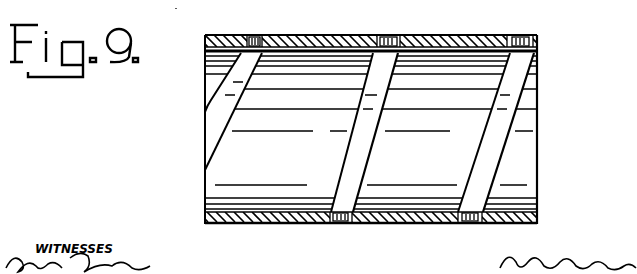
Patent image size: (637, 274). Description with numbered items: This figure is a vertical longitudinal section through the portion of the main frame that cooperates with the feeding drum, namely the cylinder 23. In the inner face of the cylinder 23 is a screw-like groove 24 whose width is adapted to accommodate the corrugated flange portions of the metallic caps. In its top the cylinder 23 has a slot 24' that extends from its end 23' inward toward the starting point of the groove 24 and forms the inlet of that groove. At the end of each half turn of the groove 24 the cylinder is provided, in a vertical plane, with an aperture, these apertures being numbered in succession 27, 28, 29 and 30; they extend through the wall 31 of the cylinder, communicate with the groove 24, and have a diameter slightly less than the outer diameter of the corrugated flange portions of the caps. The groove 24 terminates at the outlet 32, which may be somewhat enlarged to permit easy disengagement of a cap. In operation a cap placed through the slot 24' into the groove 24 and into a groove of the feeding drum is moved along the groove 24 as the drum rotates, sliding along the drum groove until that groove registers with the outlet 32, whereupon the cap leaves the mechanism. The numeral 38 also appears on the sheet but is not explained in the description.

The cylinder 23 is at (371, 39).
The end of cylinder 23' is at (563, 129).
The screw-like groove 24 is at (352, 132).
The slot 24' is at (508, 107).
The aperture 27 is at (476, 223).
The aperture 28 is at (392, 37).
The aperture 29 is at (344, 223).
The aperture 30 is at (257, 37).
The wall of cylinder 31 is at (470, 36).
The outlet 32 is at (213, 131).
The part 38 is at (175, 4).